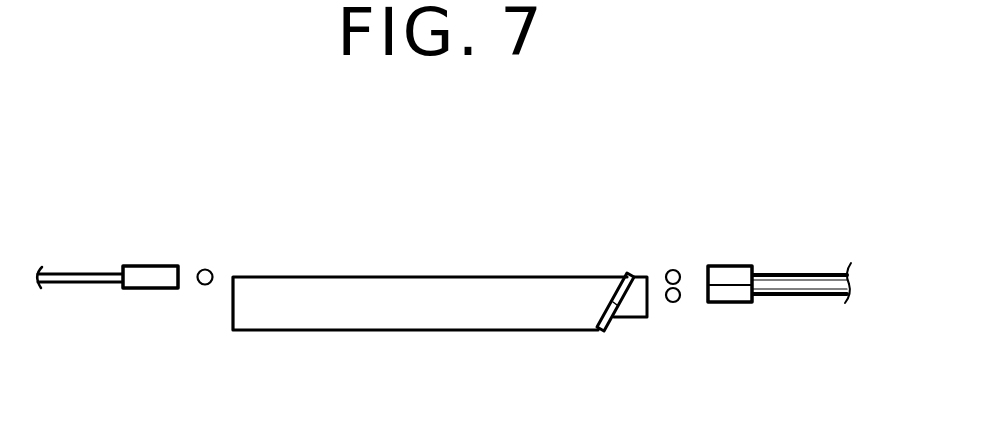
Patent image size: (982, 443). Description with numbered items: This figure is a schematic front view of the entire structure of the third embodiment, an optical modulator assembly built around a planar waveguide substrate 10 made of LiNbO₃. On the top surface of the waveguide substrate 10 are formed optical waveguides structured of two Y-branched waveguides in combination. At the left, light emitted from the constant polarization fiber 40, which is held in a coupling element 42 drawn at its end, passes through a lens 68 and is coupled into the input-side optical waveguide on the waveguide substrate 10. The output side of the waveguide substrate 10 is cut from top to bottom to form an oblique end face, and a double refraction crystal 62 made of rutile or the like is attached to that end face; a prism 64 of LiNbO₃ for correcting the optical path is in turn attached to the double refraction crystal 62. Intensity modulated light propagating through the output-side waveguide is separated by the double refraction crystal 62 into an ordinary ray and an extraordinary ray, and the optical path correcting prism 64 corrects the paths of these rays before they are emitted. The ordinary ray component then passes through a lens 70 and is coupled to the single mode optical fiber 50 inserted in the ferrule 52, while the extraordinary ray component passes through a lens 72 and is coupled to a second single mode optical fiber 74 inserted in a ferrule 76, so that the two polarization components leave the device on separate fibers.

The planar waveguide substrate 10 is at (409, 277).
The constant polarization fiber 40 is at (75, 273).
The input coupler 42 is at (147, 265).
The single mode optical fiber 50 is at (795, 274).
The ferrule 52 is at (727, 268).
The double refraction crystal 62 is at (620, 314).
The prism 64 is at (647, 318).
The lens 68 is at (207, 269).
The lens 70 is at (672, 270).
The lens 72 is at (674, 302).
The single mode optical fiber 74 is at (815, 296).
The ferrule 76 is at (738, 303).